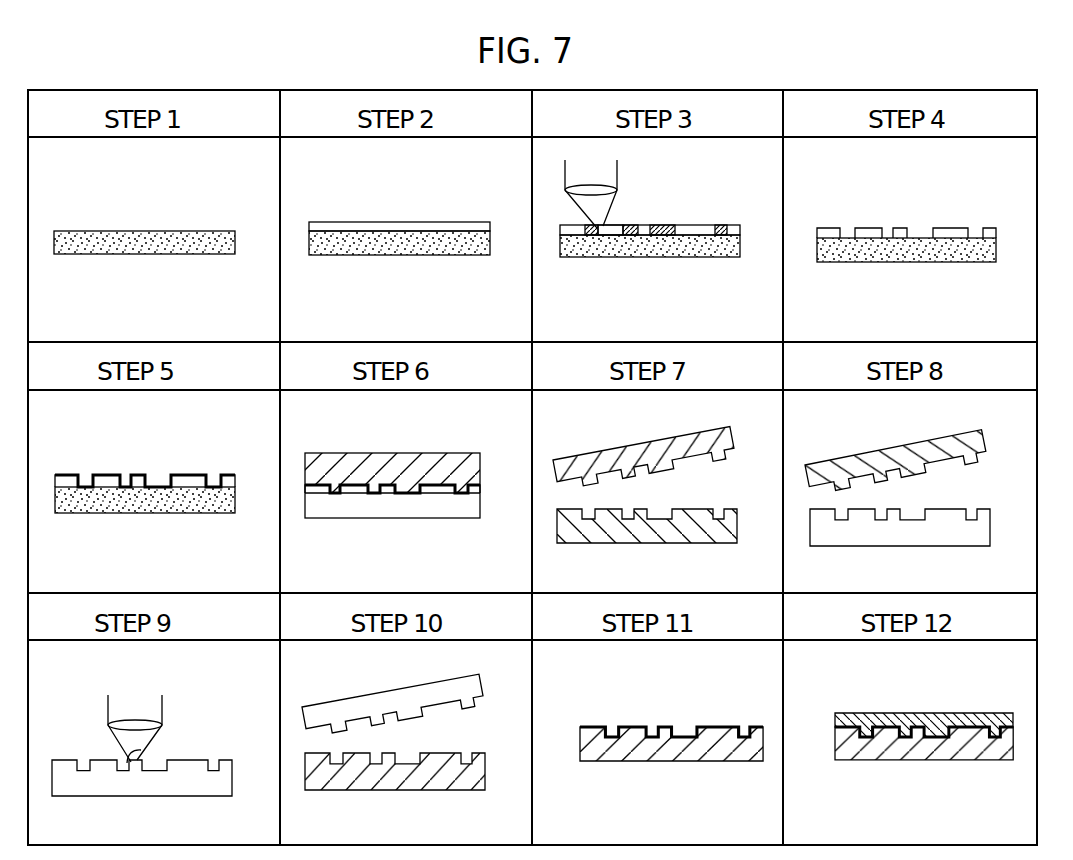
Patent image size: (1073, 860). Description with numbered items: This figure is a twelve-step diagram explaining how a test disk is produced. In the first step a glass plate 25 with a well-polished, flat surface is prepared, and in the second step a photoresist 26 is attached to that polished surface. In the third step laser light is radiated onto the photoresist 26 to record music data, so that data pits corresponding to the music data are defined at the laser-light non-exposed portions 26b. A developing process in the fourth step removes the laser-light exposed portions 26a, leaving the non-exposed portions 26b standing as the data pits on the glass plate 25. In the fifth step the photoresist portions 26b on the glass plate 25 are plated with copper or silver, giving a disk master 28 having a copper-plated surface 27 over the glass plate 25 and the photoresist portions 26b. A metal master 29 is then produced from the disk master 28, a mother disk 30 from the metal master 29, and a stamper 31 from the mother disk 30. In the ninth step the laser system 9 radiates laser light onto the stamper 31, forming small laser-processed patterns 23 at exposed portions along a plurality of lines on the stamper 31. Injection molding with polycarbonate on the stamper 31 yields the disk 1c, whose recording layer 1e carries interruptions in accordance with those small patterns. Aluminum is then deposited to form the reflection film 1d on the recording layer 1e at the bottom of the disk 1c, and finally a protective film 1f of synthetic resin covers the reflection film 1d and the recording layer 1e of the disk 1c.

The glass plate 25 is at (185, 231).
The photoresist 26 is at (423, 222).
The laser-light exposed portions 26a is at (584, 225).
The laser-light non-exposed portions 26b is at (615, 225).
The copper-plated surface 27 is at (105, 475).
The disk master 28 is at (148, 423).
The metal master 29 is at (415, 462).
The mother disk 30 is at (728, 535).
The stamper 31 is at (975, 538).
The laser system 9 is at (163, 704).
The laser-processed portion 23 is at (140, 753).
The disk 1c is at (478, 775).
The reflection film 1d is at (625, 727).
The recording layer 1e is at (720, 727).
The protective film 1f is at (865, 715).